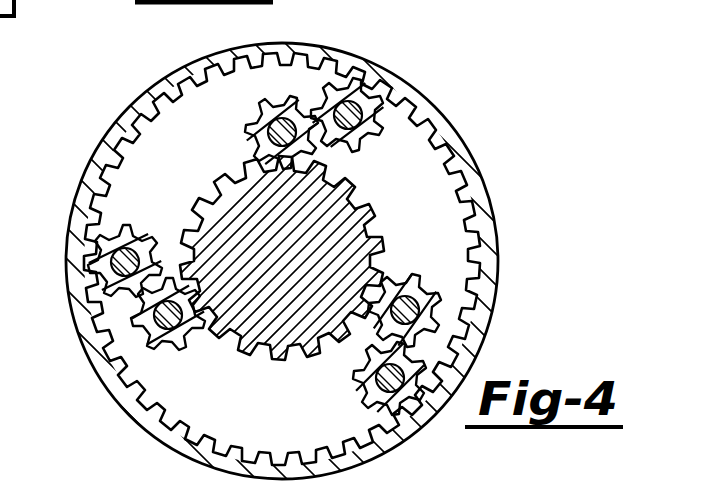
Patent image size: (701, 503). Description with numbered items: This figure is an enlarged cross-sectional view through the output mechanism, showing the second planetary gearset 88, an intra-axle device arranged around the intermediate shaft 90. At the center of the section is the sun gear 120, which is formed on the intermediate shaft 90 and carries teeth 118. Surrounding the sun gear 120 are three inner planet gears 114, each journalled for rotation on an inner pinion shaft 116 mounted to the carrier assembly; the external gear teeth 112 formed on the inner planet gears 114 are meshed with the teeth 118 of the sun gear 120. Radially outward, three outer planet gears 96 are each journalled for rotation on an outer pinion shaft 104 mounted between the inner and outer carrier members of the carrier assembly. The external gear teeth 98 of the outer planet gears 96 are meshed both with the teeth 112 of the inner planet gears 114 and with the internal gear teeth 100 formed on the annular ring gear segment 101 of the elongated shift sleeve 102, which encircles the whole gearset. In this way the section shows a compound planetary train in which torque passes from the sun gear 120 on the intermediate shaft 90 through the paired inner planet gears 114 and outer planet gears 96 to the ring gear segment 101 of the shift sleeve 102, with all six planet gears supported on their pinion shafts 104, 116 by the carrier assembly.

The second planetary gearset 88 is at (505, 117).
The intermediate shaft 90 is at (247, 247).
The outer planet gears 96 is at (391, 88).
The external gear teeth 98 is at (374, 134).
The internal gear teeth 100 is at (432, 125).
The annular ring gear segment 101 is at (497, 232).
The elongated shift sleeve 102 is at (504, 281).
The outer pinion shaft 104 is at (352, 72).
The external gear teeth 112 is at (267, 128).
The inner planet gears 114 is at (256, 139).
The inner pinion shaft 116 is at (258, 120).
The teeth 118 is at (380, 212).
The sun gear 120 is at (342, 250).